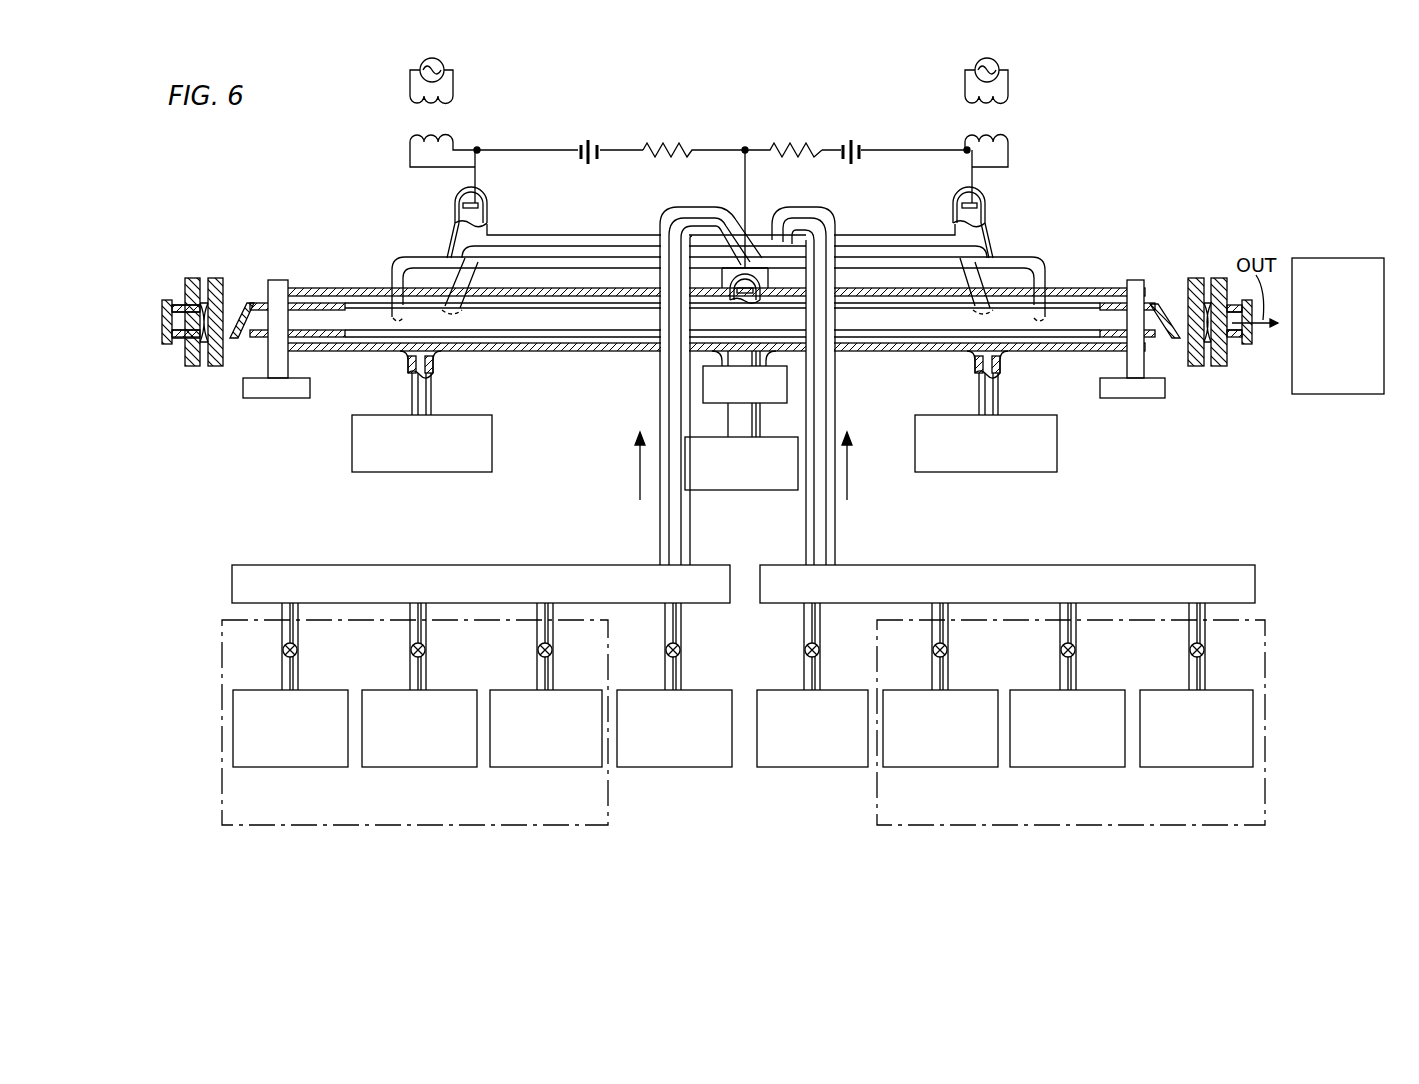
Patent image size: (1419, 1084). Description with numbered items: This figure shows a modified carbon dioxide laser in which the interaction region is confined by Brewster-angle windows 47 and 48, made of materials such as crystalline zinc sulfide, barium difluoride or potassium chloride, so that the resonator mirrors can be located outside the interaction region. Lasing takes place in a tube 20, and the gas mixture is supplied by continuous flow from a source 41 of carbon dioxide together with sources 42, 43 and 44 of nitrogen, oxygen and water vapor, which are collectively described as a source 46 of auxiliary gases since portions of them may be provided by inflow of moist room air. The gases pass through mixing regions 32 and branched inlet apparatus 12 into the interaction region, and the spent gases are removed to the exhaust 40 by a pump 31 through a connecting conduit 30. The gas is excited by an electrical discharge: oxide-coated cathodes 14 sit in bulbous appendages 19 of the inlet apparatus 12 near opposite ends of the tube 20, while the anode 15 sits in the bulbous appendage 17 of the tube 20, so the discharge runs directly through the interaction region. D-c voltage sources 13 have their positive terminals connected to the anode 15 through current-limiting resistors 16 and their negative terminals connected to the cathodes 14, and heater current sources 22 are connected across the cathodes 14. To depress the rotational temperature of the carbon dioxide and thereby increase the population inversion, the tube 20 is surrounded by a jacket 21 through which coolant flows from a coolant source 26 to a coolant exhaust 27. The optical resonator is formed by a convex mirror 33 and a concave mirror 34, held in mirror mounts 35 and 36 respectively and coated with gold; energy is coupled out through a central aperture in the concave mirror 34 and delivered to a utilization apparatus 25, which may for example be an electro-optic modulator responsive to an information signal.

The inlet apparatus 12 is at (606, 266).
The d-c voltage source 13 is at (592, 132).
The oxide-coated cathode 14 is at (462, 214).
The anode 15 is at (752, 294).
The current-limiting resistor 16 is at (666, 145).
The bulbous appendage 17 is at (732, 295).
The bulbous appendage 19 is at (458, 198).
The tube 20 is at (312, 322).
The jacket 21 is at (905, 351).
The heater current source 22 is at (708, 112).
The utilization apparatus 25 is at (1338, 258).
The coolant source 26 is at (1057, 446).
The coolant exhaust 27 is at (352, 446).
The pump conduit 30 is at (730, 418).
The pump 31 is at (770, 403).
The mixing region 32 is at (462, 565).
The mirror 33 is at (196, 332).
The concave mirror 34 is at (1228, 352).
The mirror mount 35 is at (194, 278).
The mirror mount 36 is at (1218, 278).
The exhaust 40 is at (745, 490).
The source of carbon dioxide 41 is at (768, 690).
The source of nitrogen 42 is at (564, 690).
The source of oxygen 43 is at (454, 690).
The source of water vapor 44 is at (326, 690).
The source of auxiliary gases 46 is at (608, 810).
The Brewster-angle window 47 is at (244, 304).
The Brewster-angle window 48 is at (1166, 303).